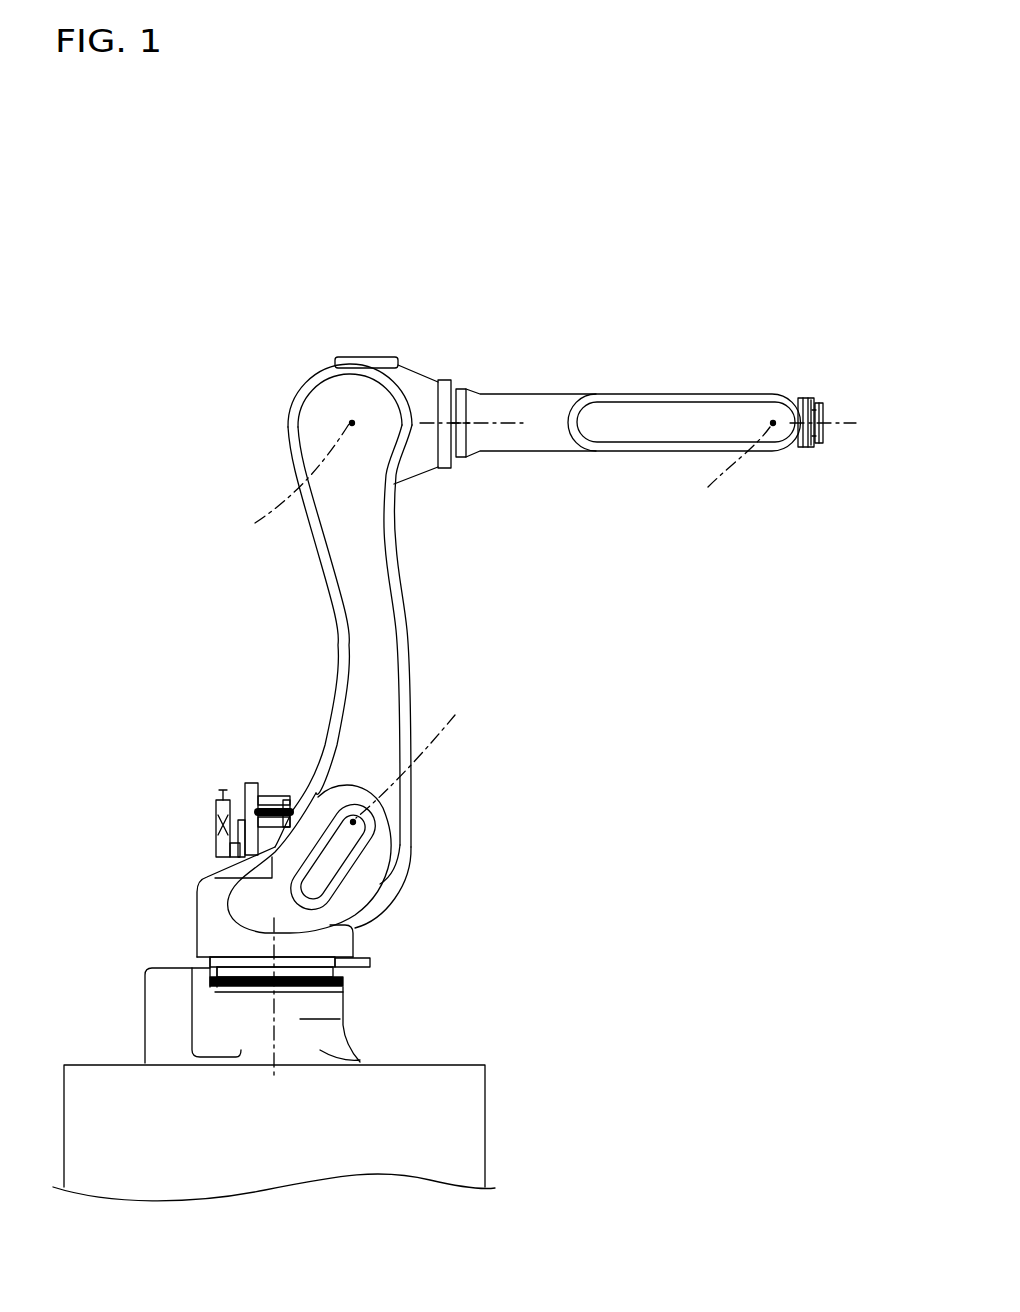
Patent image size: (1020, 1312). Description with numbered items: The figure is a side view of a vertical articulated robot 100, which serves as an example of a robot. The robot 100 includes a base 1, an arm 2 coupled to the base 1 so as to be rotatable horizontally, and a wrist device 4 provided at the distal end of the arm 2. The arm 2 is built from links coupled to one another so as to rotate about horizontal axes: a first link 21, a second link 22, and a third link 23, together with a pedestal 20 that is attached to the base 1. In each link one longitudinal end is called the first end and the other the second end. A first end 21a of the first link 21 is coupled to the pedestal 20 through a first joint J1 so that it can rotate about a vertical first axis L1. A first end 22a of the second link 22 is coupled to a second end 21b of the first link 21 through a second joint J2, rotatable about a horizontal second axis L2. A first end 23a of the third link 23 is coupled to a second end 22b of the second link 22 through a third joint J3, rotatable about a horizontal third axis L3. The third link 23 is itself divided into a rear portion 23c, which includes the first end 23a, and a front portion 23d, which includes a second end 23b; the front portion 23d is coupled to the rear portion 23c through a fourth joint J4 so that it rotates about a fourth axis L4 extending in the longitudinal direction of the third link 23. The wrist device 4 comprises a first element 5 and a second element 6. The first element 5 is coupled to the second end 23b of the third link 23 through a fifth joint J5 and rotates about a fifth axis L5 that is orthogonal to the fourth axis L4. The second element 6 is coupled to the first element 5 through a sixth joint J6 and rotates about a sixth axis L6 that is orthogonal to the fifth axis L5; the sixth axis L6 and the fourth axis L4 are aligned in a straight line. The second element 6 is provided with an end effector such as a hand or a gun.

The vertical articulated robot 100 is at (157, 252).
The base 1 is at (76, 1064).
The arm 2 is at (290, 320).
The wrist device 4 is at (793, 337).
The first element 5 is at (802, 452).
The second element 6 is at (818, 452).
The pedestal 20 is at (340, 1057).
The first link 21 is at (198, 906).
The first end of the first link 21a is at (350, 962).
The second end of the first link 21b is at (392, 840).
The second link 22 is at (338, 672).
The first end of the second link 22a is at (300, 790).
The second end of the second link 22b is at (413, 435).
The third link 23 is at (533, 291).
The first end of the third link 23a is at (300, 387).
The second end of the third link 23b is at (760, 392).
The rear portion 23c is at (418, 370).
The front portion 23d is at (478, 392).
The first joint J1 is at (362, 986).
The second joint J2 is at (400, 807).
The third joint J3 is at (292, 397).
The fourth joint J4 is at (478, 434).
The fifth joint J5 is at (770, 385).
The sixth joint J6 is at (815, 390).
The first axis L1 is at (268, 1022).
The second axis L2 is at (417, 749).
The third axis L3 is at (278, 486).
The fourth axis L4 is at (515, 420).
The fifth axis L5 is at (731, 477).
The sixth axis L6 is at (840, 420).